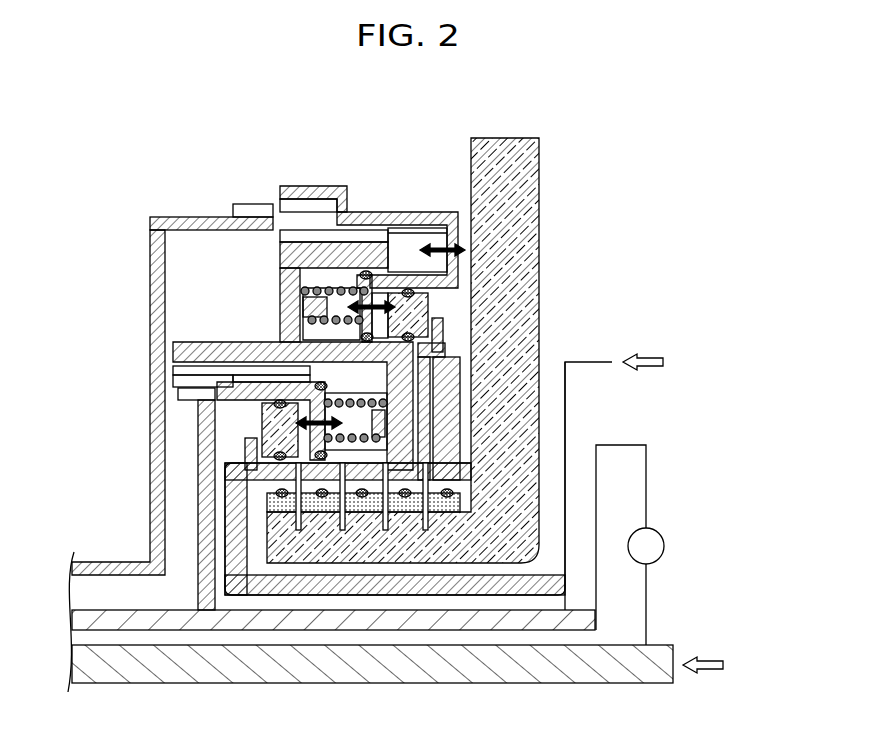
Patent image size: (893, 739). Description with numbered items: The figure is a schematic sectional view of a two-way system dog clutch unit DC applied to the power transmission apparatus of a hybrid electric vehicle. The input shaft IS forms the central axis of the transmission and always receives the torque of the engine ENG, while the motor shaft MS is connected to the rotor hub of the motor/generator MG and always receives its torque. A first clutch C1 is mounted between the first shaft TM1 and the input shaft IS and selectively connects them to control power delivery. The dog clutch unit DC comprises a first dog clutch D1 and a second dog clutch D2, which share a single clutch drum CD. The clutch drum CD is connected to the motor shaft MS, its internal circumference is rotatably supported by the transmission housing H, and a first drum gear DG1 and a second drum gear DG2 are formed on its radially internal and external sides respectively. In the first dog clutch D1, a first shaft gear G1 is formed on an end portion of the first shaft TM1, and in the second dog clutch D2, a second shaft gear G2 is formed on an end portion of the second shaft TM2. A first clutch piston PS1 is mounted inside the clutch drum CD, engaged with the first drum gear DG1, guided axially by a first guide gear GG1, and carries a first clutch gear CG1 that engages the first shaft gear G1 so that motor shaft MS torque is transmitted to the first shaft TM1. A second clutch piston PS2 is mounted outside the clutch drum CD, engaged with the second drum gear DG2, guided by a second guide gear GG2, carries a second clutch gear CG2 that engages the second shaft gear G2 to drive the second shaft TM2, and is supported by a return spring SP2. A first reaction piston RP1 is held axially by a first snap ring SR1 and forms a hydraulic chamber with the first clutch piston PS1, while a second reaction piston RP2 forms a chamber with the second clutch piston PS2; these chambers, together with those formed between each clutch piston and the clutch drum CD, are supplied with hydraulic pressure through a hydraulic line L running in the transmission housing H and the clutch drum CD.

The dog clutch unit DC is at (148, 165).
The second dog clutch D2 is at (252, 158).
The second shaft gear G2 is at (243, 210).
The second clutch gear CG2 is at (295, 208).
The second drum gear DG2 is at (317, 238).
The second guide gear GG2 is at (398, 230).
The second clutch piston PS2 is at (428, 217).
The transmission housing H is at (503, 147).
The clutch drum CD is at (280, 303).
The first clutch piston PS1 is at (265, 388).
The first drum gear DG1 is at (242, 370).
The first dog clutch D1 is at (168, 355).
The first guide gear GG1 is at (185, 373).
The first shaft gear G1 is at (185, 397).
The first clutch gear CG1 is at (193, 397).
The first reaction piston RP1 is at (262, 428).
The first snap ring SR1 is at (250, 452).
The second shaft TM2 is at (156, 508).
The second reaction piston RP2 is at (417, 303).
The return spring SP2 is at (443, 330).
The motor/generator MG is at (629, 481).
The hydraulic line L is at (433, 427).
The first clutch C1 is at (630, 545).
The engine ENG is at (724, 666).
The input shaft IS is at (323, 668).
The first shaft TM1 is at (408, 623).
The motor shaft MS is at (495, 592).